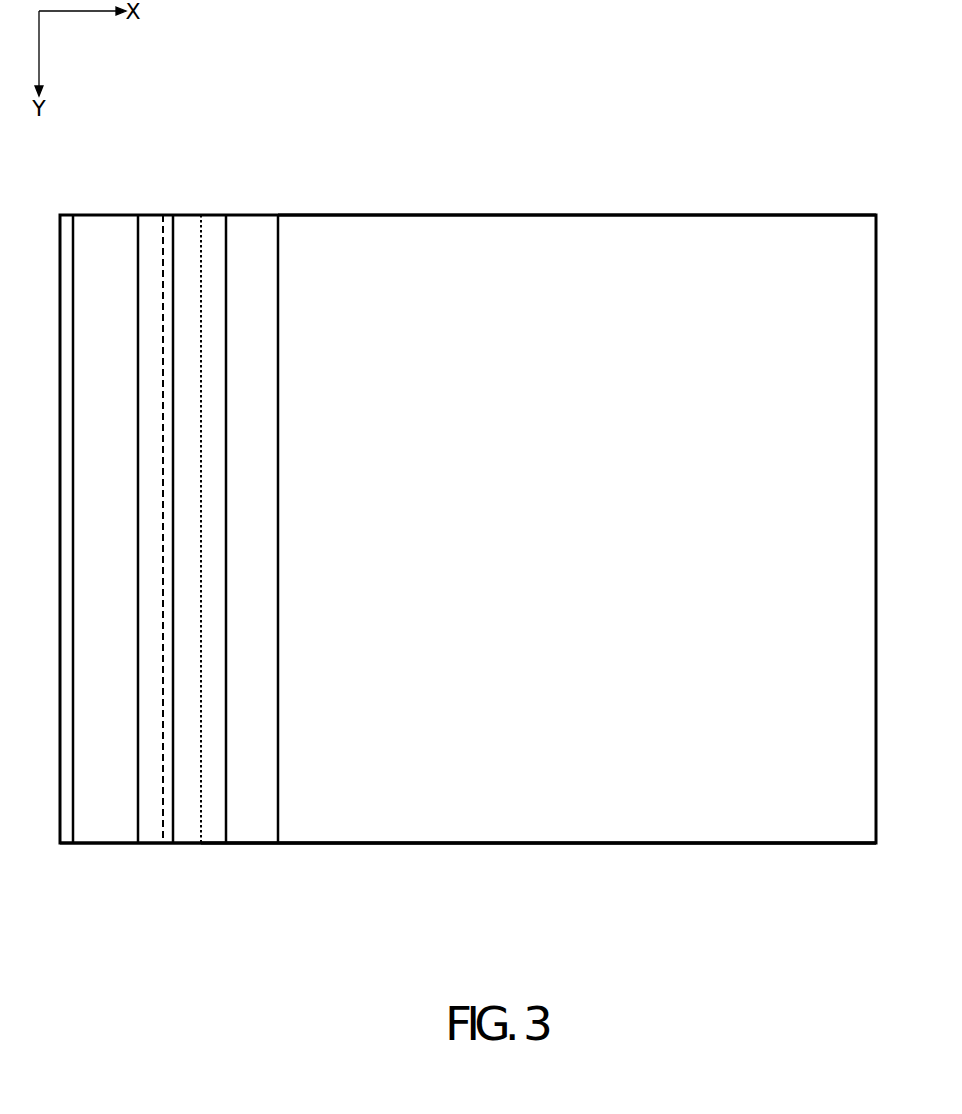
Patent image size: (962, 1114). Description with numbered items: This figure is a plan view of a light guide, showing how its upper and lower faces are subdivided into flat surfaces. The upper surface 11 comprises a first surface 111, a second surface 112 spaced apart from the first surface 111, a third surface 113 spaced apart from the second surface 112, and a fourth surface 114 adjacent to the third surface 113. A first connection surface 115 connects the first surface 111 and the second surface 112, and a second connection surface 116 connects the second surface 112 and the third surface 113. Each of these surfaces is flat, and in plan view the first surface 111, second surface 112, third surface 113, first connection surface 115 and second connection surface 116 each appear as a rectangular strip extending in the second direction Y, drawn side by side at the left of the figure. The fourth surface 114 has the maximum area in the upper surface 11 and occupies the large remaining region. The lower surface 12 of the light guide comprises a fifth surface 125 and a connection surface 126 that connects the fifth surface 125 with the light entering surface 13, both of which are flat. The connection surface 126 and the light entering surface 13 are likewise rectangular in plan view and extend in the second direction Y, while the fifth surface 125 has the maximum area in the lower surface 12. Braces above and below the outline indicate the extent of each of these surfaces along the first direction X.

The upper surface 11 is at (60, 167).
The first surface 111 is at (60, 208).
The first connection surface 115 is at (138, 208).
The second surface 112 is at (138, 208).
The second connection surface 116 is at (173, 208).
The third surface 113 is at (226, 208).
The fourth surface 114 is at (278, 208).
The light entering surface 13 is at (60, 848).
The connection surface 126 is at (163, 848).
The fifth surface 125 is at (201, 848).
The lower surface 12 is at (163, 895).